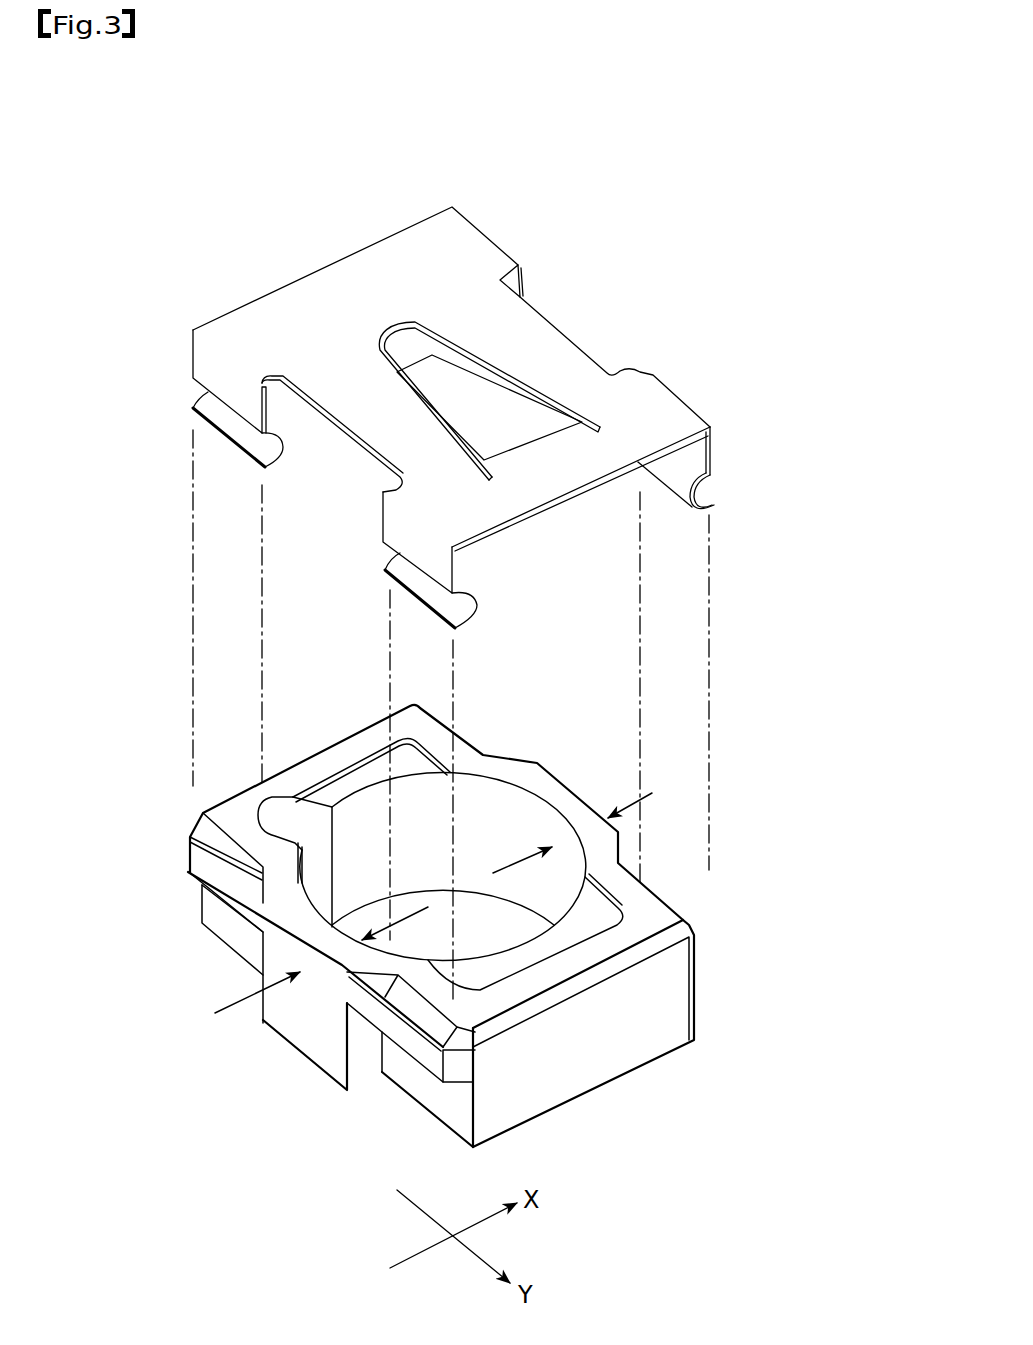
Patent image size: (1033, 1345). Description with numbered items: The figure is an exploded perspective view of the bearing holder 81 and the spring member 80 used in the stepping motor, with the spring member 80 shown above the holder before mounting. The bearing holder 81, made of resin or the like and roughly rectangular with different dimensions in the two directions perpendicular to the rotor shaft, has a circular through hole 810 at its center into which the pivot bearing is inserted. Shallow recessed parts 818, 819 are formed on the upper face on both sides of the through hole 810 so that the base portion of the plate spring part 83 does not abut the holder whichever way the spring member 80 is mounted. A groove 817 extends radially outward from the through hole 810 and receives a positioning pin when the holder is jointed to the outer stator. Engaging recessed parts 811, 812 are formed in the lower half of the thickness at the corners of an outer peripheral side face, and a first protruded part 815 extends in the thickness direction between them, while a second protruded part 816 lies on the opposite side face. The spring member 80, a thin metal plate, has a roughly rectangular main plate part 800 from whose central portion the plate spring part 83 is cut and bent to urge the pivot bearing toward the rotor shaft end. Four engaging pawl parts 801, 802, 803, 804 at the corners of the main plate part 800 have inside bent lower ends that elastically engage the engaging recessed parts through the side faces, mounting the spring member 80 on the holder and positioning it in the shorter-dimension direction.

The spring member 80 is at (367, 226).
The main plate part 800 is at (307, 294).
The engaging pawl part 801 is at (193, 346).
The engaging pawl part 802 is at (438, 572).
The engaging pawl part 803 is at (700, 446).
The engaging pawl part 804 is at (522, 280).
The plate spring part 83 is at (472, 395).
The bearing holder 81 is at (662, 891).
The through hole 810 is at (518, 787).
The engaging recessed part 811 is at (225, 918).
The engaging recessed part 812 is at (423, 1082).
The first protruded part 815 is at (313, 1020).
The second protruded part 816 is at (562, 788).
The groove 817 is at (270, 815).
The recessed part 818 is at (353, 773).
The recessed part 819 is at (562, 938).